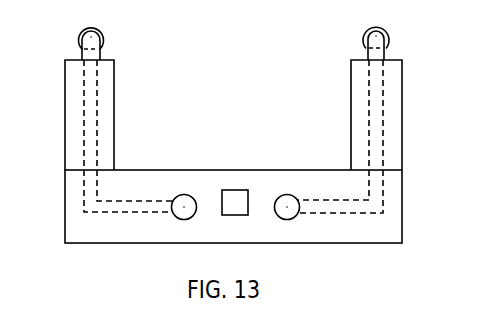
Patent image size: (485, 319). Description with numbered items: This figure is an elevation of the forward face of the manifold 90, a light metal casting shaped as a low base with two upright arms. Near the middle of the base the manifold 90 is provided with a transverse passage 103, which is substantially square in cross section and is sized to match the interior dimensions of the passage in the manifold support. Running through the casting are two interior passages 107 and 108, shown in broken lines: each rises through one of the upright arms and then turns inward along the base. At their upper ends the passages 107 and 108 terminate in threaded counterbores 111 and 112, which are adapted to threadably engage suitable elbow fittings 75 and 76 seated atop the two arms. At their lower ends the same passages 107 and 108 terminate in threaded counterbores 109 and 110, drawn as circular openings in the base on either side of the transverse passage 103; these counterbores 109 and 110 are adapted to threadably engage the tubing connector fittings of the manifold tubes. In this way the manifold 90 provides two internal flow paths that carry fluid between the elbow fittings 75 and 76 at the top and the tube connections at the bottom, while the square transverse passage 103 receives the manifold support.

The manifold 90 is at (403, 152).
The interior passage 107 is at (84, 89).
The interior passage 108 is at (385, 90).
The elbow fitting 75 is at (100, 50).
The threaded counterbore 111 is at (81, 50).
The elbow fitting 76 is at (368, 57).
The threaded counterbore 112 is at (378, 58).
The threaded counterbore 109 is at (182, 195).
The threaded counterbore 110 is at (290, 195).
The transverse passage 103 is at (243, 190).